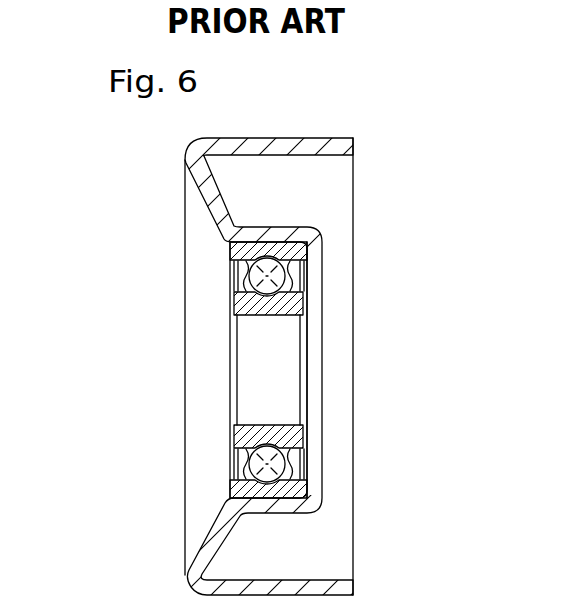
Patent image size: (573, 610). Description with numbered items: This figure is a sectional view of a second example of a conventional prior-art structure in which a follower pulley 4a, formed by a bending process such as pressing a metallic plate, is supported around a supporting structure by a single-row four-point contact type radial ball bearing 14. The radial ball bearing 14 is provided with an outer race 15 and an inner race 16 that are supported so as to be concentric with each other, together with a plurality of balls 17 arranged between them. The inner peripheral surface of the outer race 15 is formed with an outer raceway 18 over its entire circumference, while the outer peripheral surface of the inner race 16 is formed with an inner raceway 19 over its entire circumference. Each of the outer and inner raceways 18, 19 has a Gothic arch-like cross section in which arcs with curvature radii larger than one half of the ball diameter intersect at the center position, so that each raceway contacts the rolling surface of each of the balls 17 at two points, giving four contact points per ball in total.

The follower pulley 4a is at (272, 147).
The single-row four-point contact type radial ball bearing 14 is at (286, 305).
The outer race 15 is at (230, 245).
The inner race 16 is at (230, 303).
The balls 17 is at (310, 274).
The outer raceway 18 is at (272, 486).
The inner raceway 19 is at (269, 315).